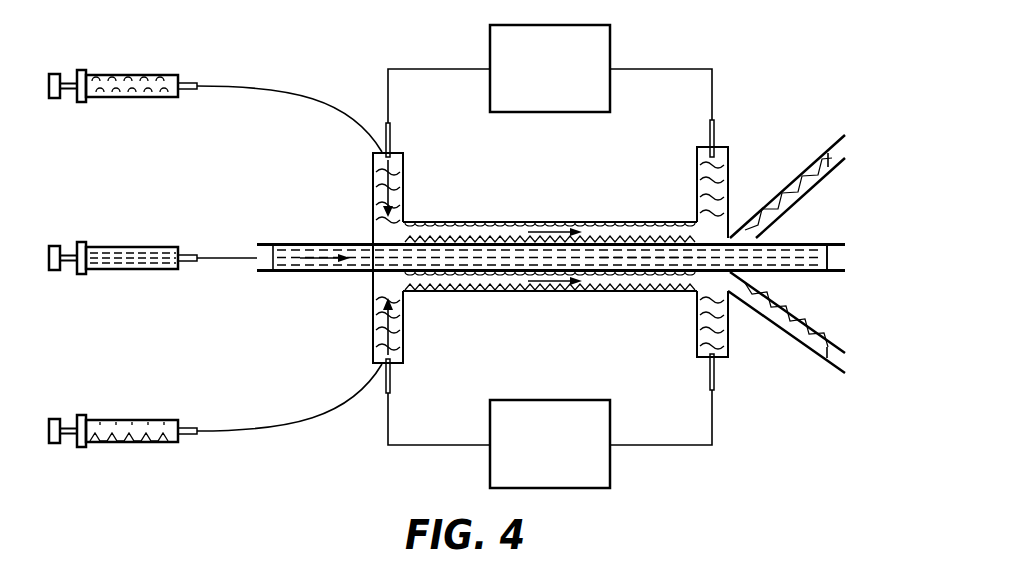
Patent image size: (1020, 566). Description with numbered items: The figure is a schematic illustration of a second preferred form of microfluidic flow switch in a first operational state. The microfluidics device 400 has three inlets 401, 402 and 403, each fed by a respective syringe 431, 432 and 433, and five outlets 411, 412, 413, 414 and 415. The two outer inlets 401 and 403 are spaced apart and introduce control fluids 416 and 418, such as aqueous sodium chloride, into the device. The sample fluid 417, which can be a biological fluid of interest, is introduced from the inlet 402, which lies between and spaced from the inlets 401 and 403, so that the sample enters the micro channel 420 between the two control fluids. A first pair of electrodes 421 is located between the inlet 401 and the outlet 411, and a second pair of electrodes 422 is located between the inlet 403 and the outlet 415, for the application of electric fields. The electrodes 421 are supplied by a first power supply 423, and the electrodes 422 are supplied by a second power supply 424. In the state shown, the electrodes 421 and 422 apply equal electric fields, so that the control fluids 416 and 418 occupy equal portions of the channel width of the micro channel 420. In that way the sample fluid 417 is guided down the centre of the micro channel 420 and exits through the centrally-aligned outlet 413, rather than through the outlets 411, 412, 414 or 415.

The microfluidics device 400 is at (764, 84).
The inlet 401 is at (373, 172).
The inlet 402 is at (294, 243).
The inlet 403 is at (373, 345).
The outlet 411 is at (730, 172).
The outlet 412 is at (828, 172).
The outlet 413 is at (828, 273).
The outlet 414 is at (828, 370).
The outlet 415 is at (730, 343).
The control fluid 416 is at (460, 230).
The sample fluid 417 is at (630, 253).
The control fluid 418 is at (460, 292).
The micro channel 420 is at (552, 212).
The first pair of electrodes 421 is at (392, 138).
The second pair of electrodes 422 is at (392, 378).
The first power supply 423 is at (608, 49).
The second power supply 424 is at (608, 465).
The syringe 431 is at (133, 72).
The syringe 432 is at (133, 247).
The syringe 433 is at (133, 420).